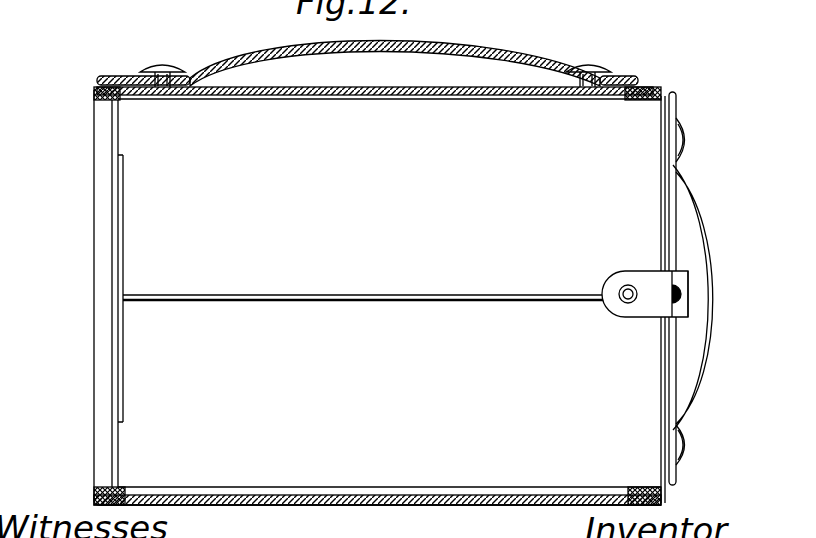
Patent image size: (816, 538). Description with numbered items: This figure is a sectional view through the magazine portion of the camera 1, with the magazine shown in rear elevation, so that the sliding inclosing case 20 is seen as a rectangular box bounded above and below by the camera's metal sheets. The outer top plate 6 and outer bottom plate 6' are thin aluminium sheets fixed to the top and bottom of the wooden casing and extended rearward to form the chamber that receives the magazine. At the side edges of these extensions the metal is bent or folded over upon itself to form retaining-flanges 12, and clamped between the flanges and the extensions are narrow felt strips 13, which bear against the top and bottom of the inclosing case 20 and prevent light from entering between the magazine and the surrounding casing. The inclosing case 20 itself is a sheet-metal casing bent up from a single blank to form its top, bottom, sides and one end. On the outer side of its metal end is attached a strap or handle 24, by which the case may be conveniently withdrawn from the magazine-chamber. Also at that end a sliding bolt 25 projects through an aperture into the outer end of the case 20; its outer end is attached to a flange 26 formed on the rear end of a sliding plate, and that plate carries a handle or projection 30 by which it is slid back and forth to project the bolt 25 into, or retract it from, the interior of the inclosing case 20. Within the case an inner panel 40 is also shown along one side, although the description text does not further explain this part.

The handle 1 is at (395, 64).
The outer top plate 6 is at (367, 71).
The outer bottom plate 6' is at (380, 521).
The retaining-flanges 12 is at (108, 92).
The felt strips 13 is at (112, 101).
The sliding inclosing case 20 is at (379, 297).
The strap or handle 24 is at (712, 280).
The sliding bolt 25 is at (628, 286).
The flange 26 is at (650, 312).
The handle or projection 30 is at (690, 310).
The inner panel 40 is at (104, 278).